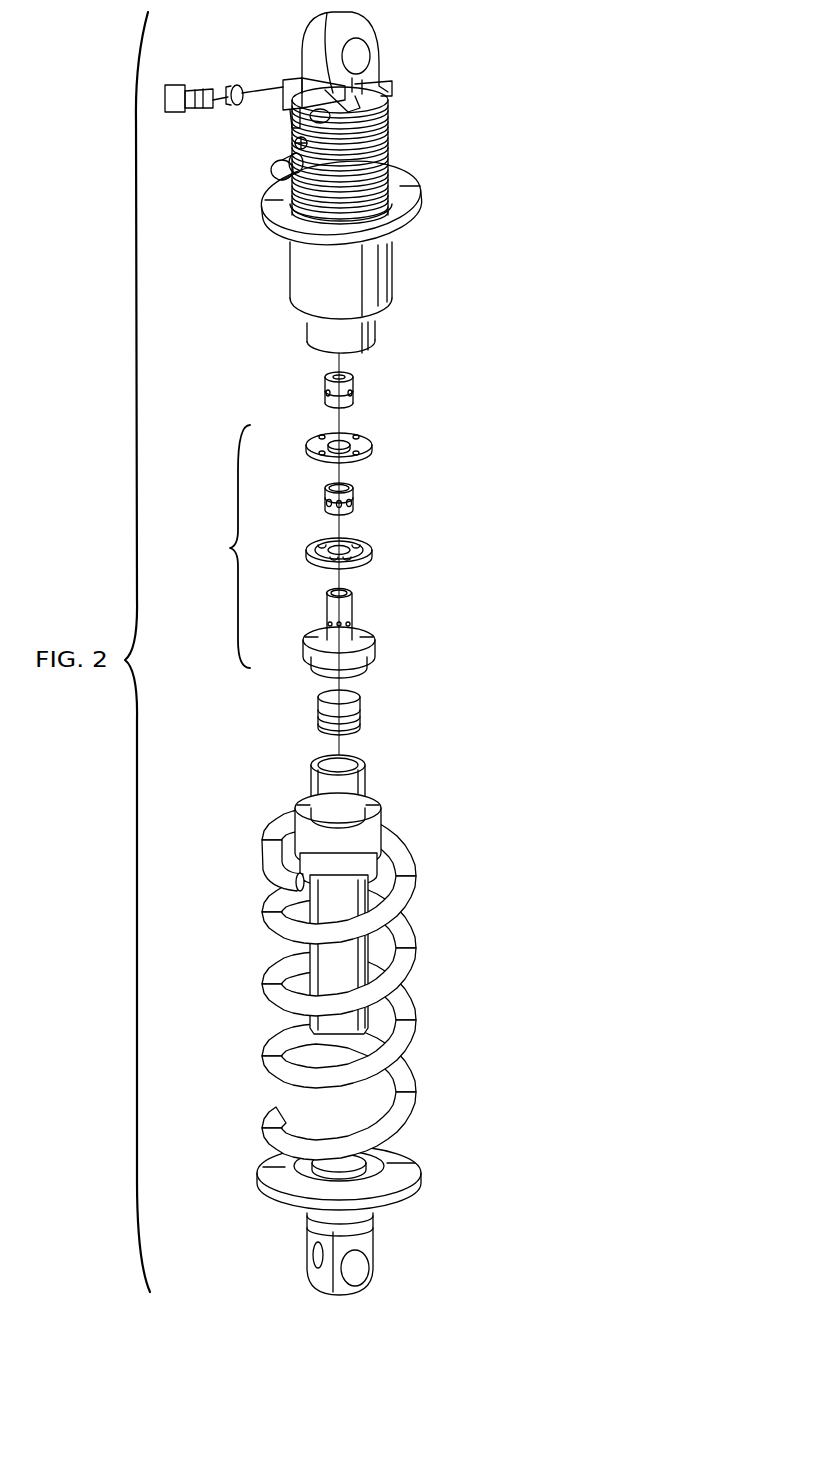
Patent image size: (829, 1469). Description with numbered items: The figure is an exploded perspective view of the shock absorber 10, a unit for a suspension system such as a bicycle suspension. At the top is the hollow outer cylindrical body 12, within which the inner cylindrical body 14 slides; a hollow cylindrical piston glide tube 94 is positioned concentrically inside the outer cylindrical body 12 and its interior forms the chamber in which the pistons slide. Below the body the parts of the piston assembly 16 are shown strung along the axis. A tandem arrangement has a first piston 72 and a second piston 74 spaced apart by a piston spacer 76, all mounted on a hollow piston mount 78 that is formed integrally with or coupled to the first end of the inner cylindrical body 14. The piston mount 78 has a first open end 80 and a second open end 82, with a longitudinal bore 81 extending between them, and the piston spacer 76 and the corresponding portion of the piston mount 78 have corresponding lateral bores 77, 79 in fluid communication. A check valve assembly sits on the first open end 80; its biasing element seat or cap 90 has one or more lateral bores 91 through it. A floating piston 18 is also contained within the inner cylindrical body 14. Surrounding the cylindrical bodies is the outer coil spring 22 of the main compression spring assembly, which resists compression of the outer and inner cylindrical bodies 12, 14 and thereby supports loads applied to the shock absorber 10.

The shock absorber 10 is at (206, 386).
The outer cylindrical body 12 is at (306, 182).
The piston glide tube 94 is at (315, 331).
The biasing element seat or cap 90 is at (374, 396).
The lateral bores 91 is at (353, 384).
The piston assembly 16 is at (225, 546).
The first piston 72 is at (373, 446).
The piston spacer 76 is at (353, 501).
The lateral bores of piston spacer 77 is at (327, 504).
The second piston 74 is at (373, 549).
The first open end of piston mount 80 is at (351, 642).
The longitudinal bore 81 is at (351, 595).
The lateral bores of piston mount 79 is at (356, 625).
The piston mount 78 is at (361, 650).
The second open end of piston mount 82 is at (384, 674).
The floating piston 18 is at (320, 715).
The inner cylindrical body 14 is at (313, 952).
The outer coil spring 22 is at (408, 942).